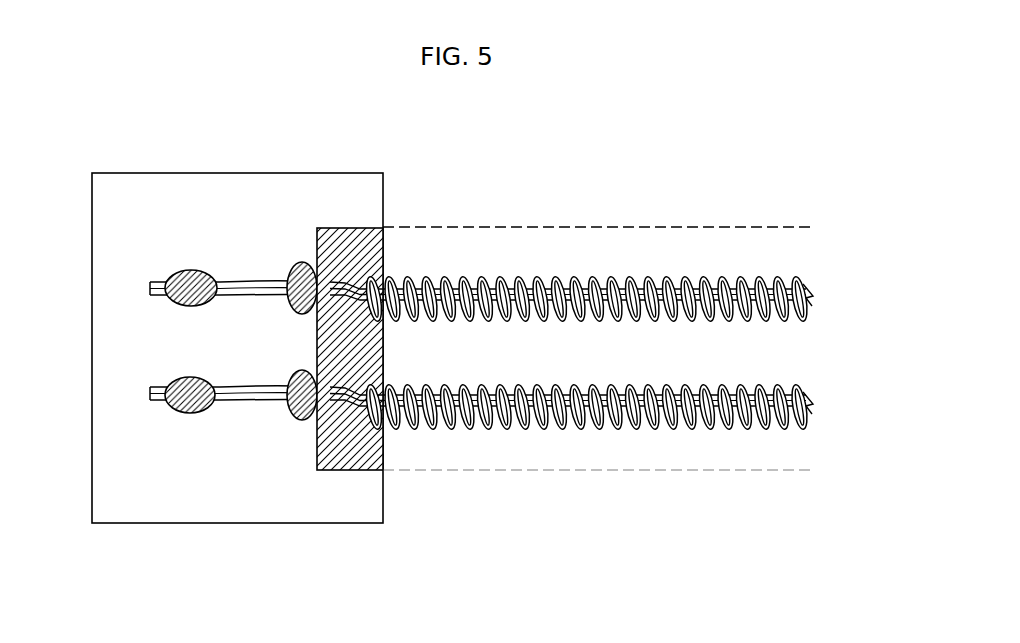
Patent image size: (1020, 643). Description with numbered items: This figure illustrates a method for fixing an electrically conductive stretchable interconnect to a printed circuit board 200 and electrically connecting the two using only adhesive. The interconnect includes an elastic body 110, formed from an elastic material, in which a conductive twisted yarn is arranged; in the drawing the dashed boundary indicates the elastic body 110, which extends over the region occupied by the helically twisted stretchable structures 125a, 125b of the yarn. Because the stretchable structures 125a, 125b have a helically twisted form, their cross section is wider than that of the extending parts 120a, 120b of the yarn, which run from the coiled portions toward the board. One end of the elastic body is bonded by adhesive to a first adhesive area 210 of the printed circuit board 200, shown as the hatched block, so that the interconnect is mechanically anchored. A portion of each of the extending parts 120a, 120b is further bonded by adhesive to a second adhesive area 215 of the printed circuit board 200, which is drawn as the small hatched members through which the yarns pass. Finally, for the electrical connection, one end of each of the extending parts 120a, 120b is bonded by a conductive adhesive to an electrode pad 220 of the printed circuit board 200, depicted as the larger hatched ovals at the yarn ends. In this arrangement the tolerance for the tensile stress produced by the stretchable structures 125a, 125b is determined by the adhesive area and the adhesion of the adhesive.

The printed circuit board 200 is at (167, 168).
The elastic body 110 is at (656, 222).
The extending part 120a is at (245, 280).
The extending part 120b is at (245, 403).
The stretchable structure 125a is at (741, 278).
The stretchable structure 125b is at (745, 430).
The electrode pad 220 is at (175, 380).
The second adhesive area 215 is at (298, 421).
The first adhesive area 210 is at (351, 460).